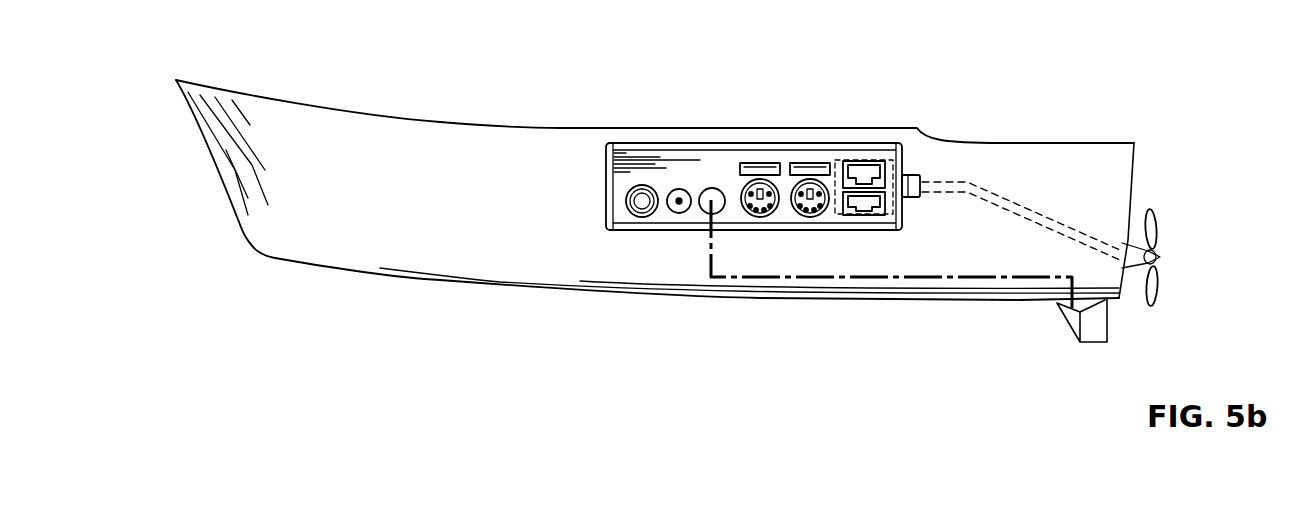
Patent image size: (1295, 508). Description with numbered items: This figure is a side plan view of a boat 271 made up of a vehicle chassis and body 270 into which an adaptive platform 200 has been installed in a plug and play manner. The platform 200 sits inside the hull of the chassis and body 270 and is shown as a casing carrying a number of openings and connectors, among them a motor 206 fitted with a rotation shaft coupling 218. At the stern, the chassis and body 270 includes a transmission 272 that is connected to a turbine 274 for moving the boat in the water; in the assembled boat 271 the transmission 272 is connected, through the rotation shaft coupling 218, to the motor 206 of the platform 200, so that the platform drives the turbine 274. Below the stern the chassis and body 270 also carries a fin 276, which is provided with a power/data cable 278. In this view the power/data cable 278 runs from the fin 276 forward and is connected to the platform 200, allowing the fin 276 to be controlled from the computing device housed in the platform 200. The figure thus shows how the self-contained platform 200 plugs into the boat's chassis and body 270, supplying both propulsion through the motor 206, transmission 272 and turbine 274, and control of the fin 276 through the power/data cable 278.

The boat 271 is at (247, 50).
The platform 200 is at (585, 167).
The motor 206 is at (837, 162).
The vehicle chassis and body 270 is at (882, 128).
The rotation shaft coupling 218 is at (912, 175).
The transmission 272 is at (993, 193).
The propeller 274 is at (1157, 228).
The fin 276 is at (1100, 333).
The power/data cable 278 is at (711, 262).